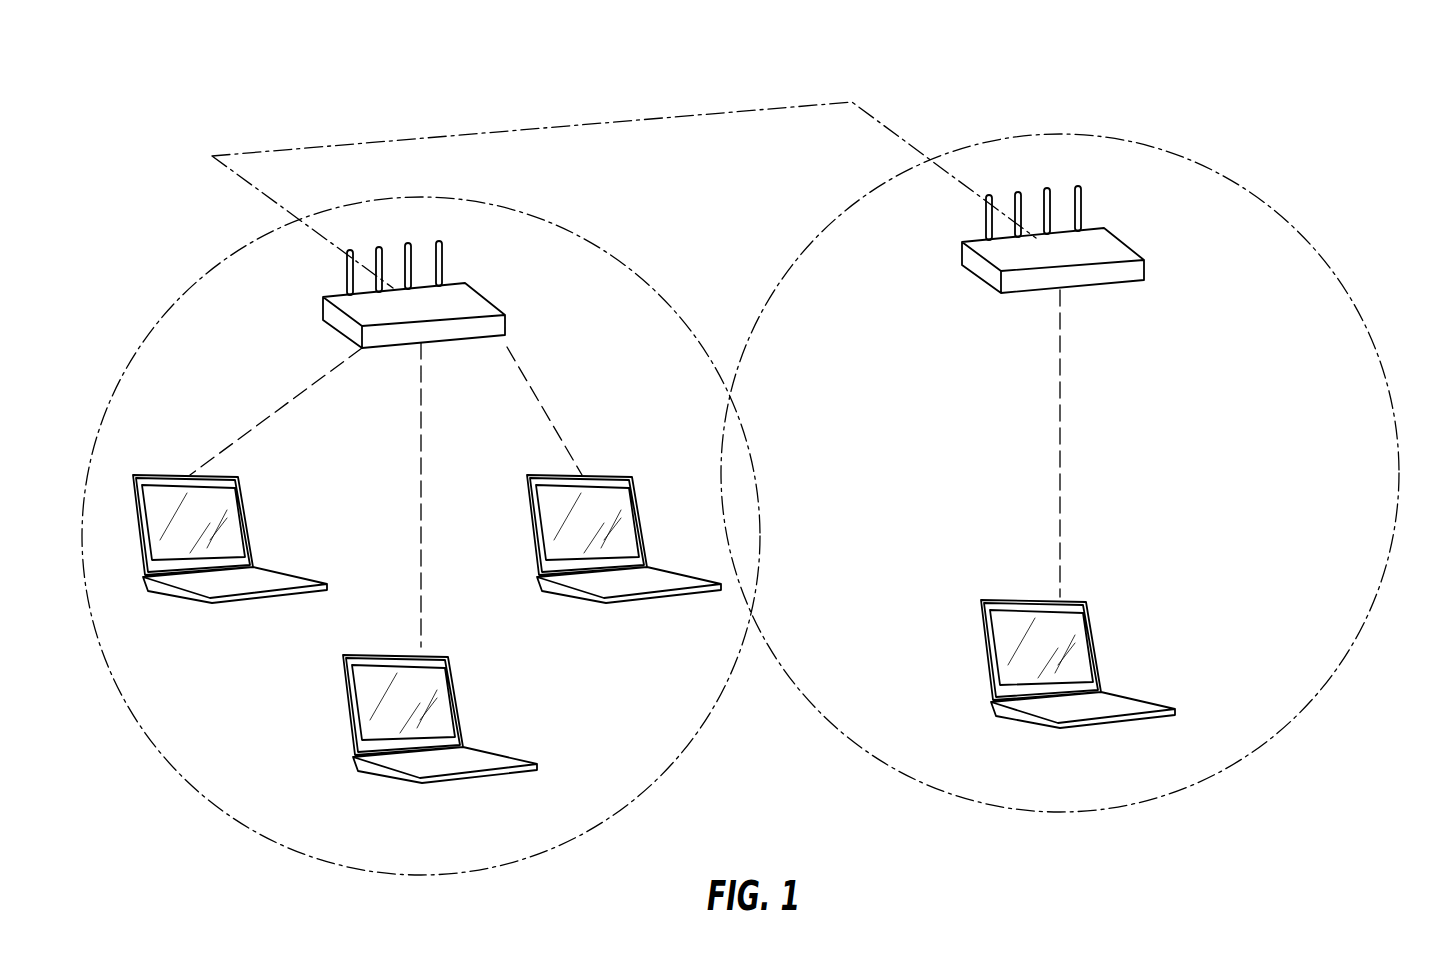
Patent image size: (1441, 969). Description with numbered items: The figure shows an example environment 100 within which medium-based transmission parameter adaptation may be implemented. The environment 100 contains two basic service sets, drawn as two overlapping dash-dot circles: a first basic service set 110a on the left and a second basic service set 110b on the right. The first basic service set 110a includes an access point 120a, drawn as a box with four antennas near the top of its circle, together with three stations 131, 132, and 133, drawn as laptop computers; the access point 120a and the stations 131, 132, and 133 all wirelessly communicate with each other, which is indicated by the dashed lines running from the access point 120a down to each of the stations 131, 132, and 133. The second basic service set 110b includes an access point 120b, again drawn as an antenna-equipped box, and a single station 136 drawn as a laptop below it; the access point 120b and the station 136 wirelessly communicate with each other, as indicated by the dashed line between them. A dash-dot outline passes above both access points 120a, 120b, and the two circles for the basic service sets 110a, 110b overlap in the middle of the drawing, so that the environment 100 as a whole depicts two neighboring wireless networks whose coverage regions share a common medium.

The environment 100 is at (1349, 90).
The basic service set 110a is at (717, 705).
The basic service set 110b is at (1355, 645).
The access point 120a is at (490, 298).
The access point 120b is at (1129, 246).
The station 131 is at (197, 602).
The station 132 is at (407, 782).
The station 133 is at (591, 604).
The station 136 is at (1047, 728).